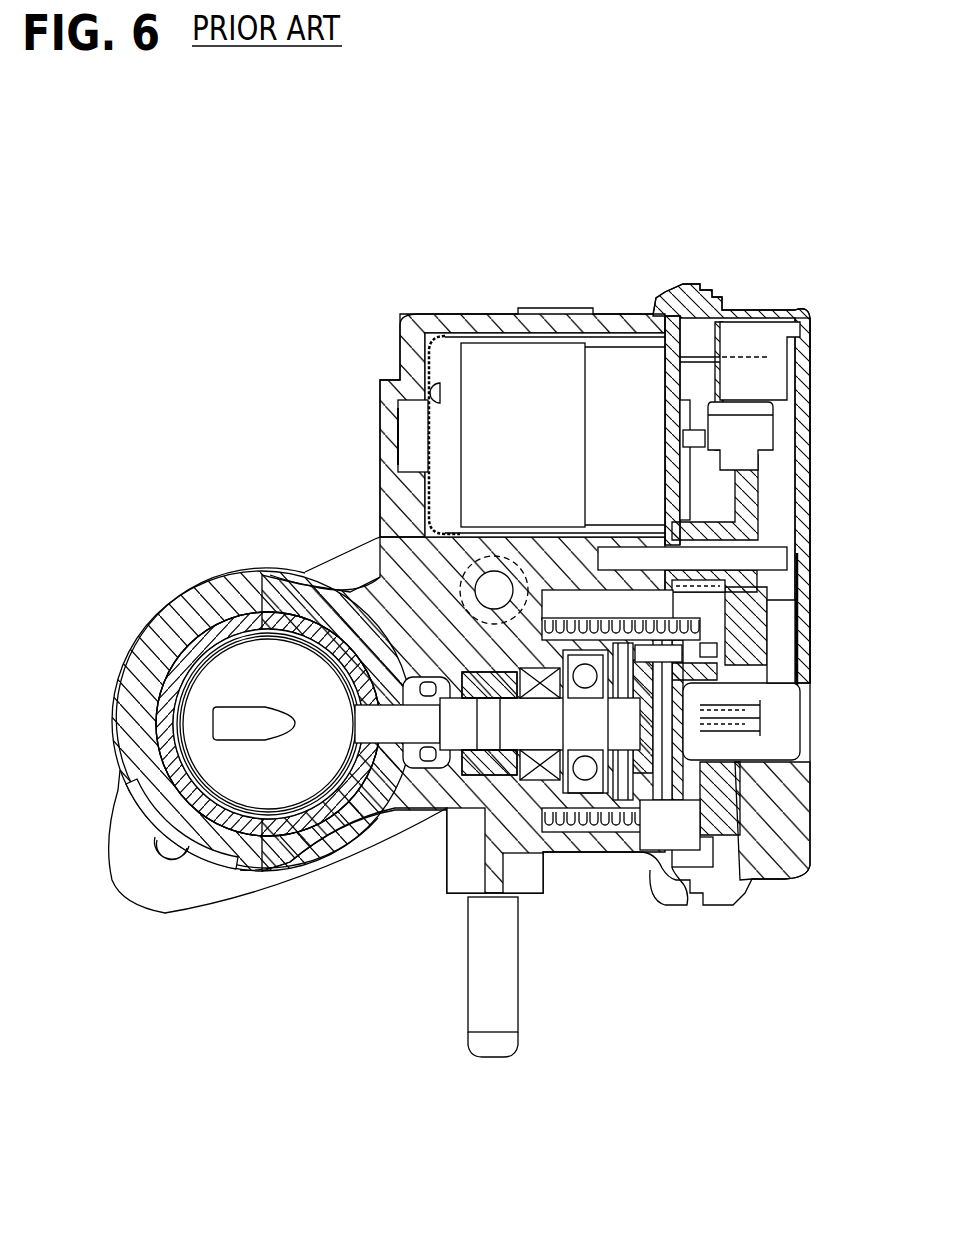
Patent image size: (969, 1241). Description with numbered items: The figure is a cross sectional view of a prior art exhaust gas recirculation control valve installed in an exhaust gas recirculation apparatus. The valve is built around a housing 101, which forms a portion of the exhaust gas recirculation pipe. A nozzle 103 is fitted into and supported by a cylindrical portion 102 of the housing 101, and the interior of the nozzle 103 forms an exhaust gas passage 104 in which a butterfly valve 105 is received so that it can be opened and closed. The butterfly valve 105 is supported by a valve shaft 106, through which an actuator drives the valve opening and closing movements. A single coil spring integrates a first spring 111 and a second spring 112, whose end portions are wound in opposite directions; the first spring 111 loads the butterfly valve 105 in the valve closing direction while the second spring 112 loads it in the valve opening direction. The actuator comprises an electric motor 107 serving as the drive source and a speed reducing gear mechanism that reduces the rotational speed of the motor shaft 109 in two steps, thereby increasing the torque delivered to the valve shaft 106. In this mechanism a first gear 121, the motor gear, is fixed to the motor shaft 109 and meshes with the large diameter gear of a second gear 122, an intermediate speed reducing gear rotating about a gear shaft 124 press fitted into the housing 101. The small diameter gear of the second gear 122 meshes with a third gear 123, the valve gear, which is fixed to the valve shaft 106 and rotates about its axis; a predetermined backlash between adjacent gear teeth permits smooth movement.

The housing 101 is at (390, 480).
The cylindrical portion 102 is at (222, 592).
The nozzle 103 is at (205, 640).
The exhaust gas passage 104 is at (175, 748).
The butterfly valve 105 is at (220, 678).
The valve shaft 106 is at (398, 800).
The electric motor 107 is at (505, 358).
The motor shaft 109 is at (696, 428).
The first spring 111 is at (580, 832).
The second spring 112 is at (660, 835).
The first gear 121 is at (757, 432).
The second gear 122 is at (772, 600).
The third gear 123 is at (748, 622).
The gear shaft 124 is at (780, 551).